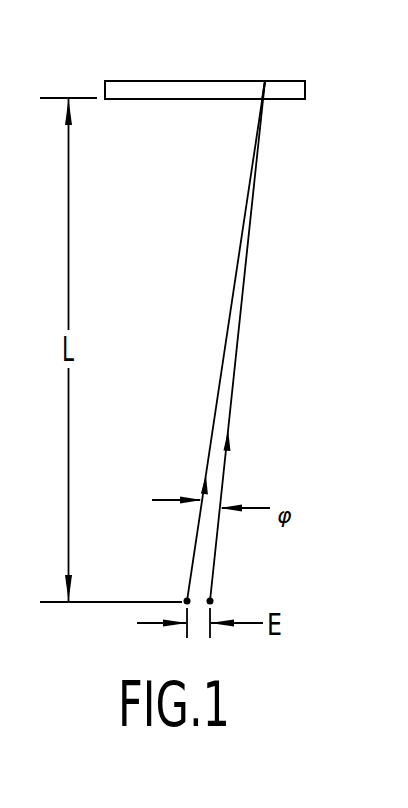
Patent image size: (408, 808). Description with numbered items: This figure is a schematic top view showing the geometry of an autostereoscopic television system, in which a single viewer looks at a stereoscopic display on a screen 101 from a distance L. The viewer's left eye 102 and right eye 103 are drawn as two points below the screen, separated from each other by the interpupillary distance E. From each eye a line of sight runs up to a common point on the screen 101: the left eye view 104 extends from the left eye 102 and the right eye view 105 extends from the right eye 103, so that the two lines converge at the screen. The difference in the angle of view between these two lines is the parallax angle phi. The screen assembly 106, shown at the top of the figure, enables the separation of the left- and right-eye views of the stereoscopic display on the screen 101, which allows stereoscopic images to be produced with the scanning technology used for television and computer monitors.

The screen 101 is at (177, 81).
The left eye 102 is at (186, 599).
The right eye 103 is at (213, 600).
The left eye view 104 is at (204, 472).
The right eye view 105 is at (227, 471).
The screen assembly 106 is at (284, 90).